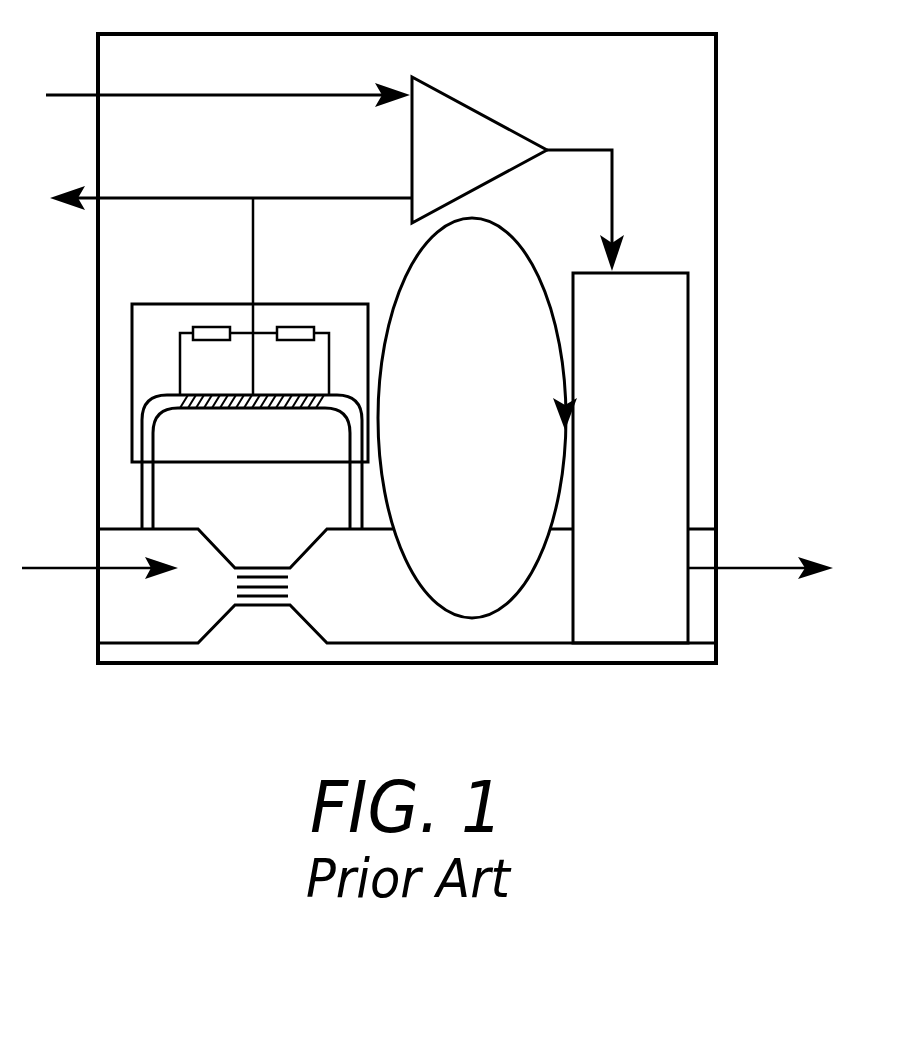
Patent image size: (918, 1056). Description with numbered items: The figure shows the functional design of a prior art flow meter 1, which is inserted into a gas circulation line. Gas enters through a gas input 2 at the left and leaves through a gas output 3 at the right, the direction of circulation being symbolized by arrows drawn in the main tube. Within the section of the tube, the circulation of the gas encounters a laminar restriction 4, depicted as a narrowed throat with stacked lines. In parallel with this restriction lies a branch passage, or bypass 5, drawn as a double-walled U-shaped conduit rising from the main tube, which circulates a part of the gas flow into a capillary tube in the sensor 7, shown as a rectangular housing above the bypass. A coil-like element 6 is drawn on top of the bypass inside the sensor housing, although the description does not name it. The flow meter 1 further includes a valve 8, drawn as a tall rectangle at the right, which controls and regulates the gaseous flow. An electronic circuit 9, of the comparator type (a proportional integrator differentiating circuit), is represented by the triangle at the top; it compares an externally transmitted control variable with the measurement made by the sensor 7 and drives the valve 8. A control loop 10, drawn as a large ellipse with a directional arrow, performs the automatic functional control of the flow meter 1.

The flow meter 1 is at (703, 218).
The gas input 2 is at (142, 600).
The gas output 3 is at (703, 598).
The laminar restriction 4 is at (273, 567).
The branch passage (bypass) 5 is at (140, 490).
The coil 6 is at (205, 395).
The sensor 7 is at (145, 302).
The valve 8 is at (677, 408).
The electronic circuit 9 is at (465, 120).
The control loop 10 is at (515, 273).